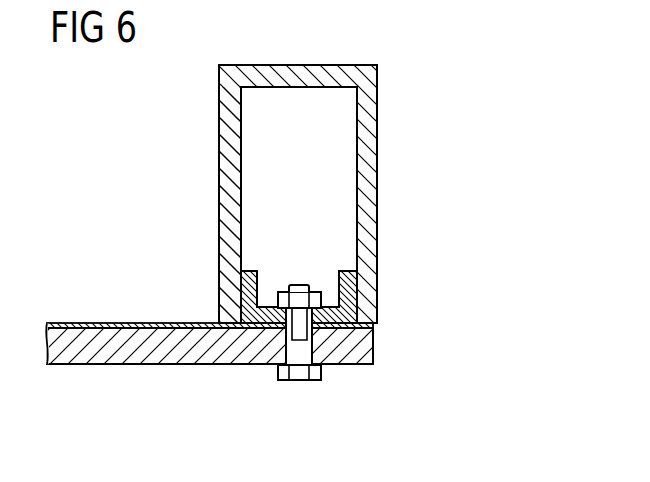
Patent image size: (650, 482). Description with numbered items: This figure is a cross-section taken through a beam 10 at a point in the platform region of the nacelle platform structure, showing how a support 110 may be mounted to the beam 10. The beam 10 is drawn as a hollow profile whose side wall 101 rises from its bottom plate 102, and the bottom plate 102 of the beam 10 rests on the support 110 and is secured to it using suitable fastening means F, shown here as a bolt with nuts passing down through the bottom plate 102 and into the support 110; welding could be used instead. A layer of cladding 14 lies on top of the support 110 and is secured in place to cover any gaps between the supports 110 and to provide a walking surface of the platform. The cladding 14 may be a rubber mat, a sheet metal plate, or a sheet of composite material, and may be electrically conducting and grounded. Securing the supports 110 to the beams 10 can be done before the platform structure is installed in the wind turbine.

The beam 10 is at (261, 194).
The side wall of profile 101 is at (227, 203).
The bottom plate 102 is at (255, 272).
The cladding 14 is at (118, 323).
The support 110 is at (155, 357).
The fastening means F is at (278, 368).